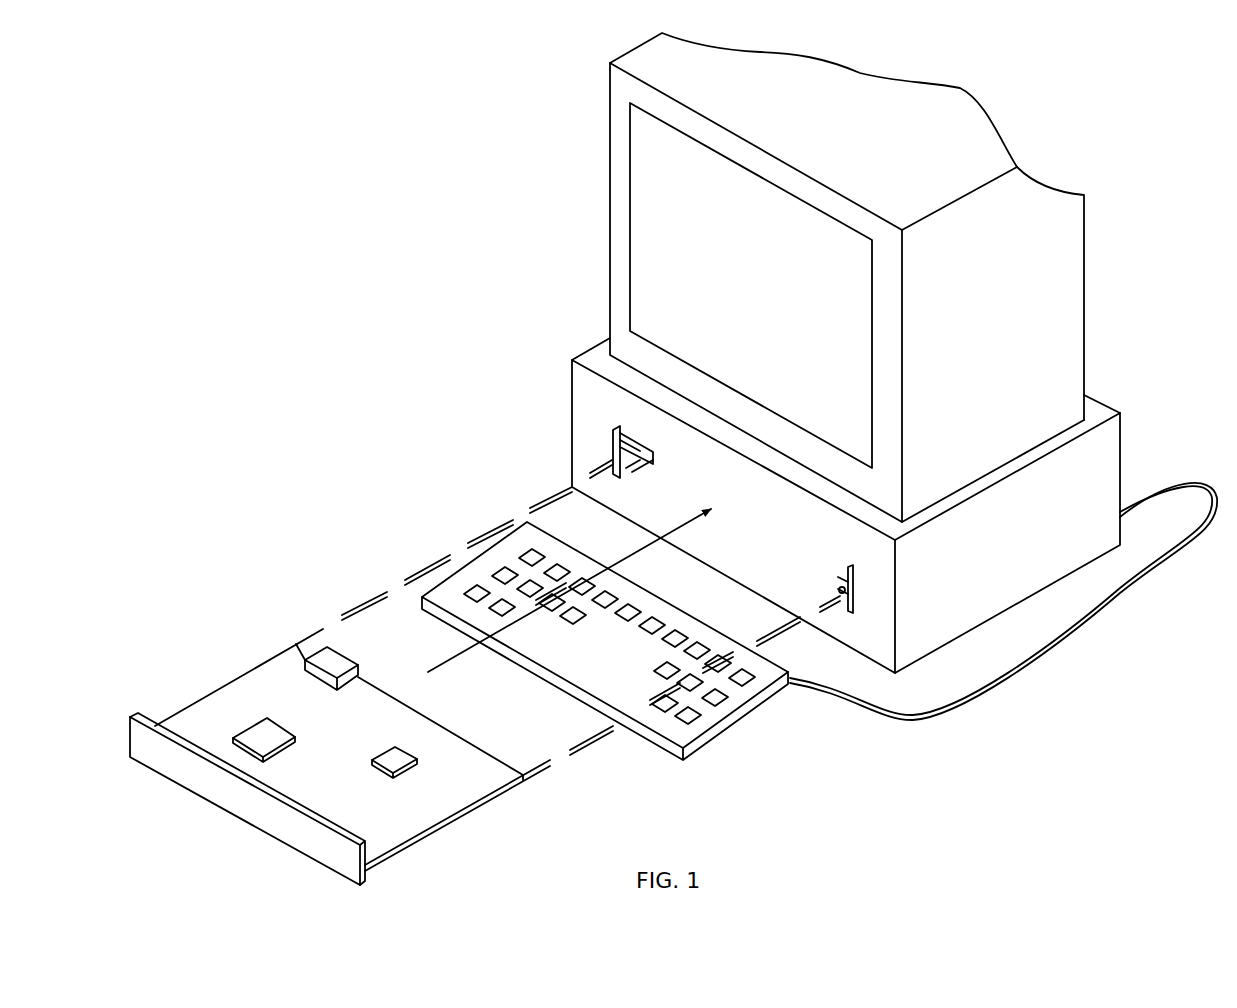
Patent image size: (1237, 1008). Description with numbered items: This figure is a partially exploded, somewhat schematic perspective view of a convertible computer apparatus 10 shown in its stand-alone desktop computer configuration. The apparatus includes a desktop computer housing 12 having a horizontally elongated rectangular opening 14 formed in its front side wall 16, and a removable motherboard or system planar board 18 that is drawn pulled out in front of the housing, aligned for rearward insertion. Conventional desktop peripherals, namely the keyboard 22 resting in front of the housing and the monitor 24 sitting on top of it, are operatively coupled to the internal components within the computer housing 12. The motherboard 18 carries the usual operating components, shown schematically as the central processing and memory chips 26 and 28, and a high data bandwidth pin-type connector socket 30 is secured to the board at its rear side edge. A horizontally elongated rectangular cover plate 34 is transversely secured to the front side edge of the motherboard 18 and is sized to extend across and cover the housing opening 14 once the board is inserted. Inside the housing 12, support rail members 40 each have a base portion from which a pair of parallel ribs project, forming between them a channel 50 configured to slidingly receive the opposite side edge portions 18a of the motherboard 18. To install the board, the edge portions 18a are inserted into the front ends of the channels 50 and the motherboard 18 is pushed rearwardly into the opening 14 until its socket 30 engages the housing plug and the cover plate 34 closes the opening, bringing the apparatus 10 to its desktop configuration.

The convertible computer apparatus 10 is at (538, 346).
The desktop computer housing 12 is at (570, 392).
The rectangular opening 14 is at (677, 512).
The front side wall 16 is at (883, 577).
The motherboard 18 is at (412, 853).
The side edge portions 18a is at (250, 672).
The keyboard 22 is at (750, 713).
The monitor 24 is at (626, 194).
The central processing chip 26 is at (247, 732).
The memory chip 28 is at (418, 763).
The connector socket 30 is at (342, 656).
The cover plate 34 is at (250, 805).
The support rail member 40 is at (608, 445).
The channel 50 is at (638, 456).